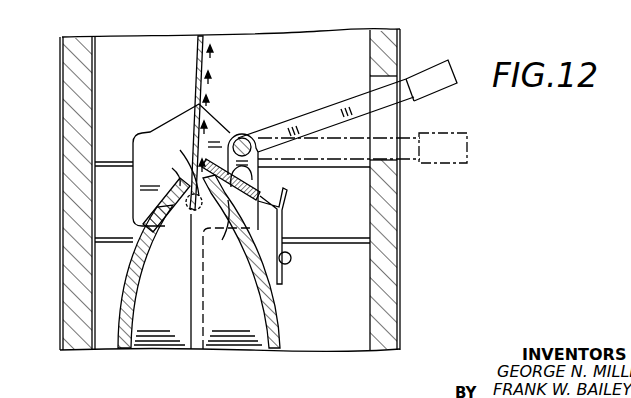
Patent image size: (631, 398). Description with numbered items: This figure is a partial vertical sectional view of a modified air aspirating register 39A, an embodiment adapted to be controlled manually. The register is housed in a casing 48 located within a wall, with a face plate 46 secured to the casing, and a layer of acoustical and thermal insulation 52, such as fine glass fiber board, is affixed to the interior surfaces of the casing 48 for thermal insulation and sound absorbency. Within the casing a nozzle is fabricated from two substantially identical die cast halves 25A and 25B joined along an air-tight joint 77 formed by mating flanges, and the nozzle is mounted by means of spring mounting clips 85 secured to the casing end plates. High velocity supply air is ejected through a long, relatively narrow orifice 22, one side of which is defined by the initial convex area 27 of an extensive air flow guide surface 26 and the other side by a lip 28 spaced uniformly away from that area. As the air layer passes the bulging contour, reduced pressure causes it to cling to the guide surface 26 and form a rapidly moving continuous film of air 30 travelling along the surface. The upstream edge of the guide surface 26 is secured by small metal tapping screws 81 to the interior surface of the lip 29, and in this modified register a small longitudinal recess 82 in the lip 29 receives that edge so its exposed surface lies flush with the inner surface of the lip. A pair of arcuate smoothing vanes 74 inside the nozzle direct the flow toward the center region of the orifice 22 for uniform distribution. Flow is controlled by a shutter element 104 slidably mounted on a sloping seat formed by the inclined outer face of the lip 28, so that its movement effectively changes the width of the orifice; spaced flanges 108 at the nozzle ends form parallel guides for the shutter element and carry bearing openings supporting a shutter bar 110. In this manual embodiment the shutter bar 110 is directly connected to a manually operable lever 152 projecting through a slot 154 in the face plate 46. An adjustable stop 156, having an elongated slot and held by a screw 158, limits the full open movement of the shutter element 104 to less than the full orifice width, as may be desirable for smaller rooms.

The casing 48 is at (60, 113).
The acoustical and thermal insulation 52 is at (93, 76).
The spring mounting clips 85 is at (116, 208).
The die cast half 25A is at (134, 259).
The die cast half 25B is at (280, 308).
The air flow guide surface 26 is at (196, 62).
The film of air 30 is at (210, 67).
The flanges 108 is at (176, 115).
The shutter bar 110 is at (244, 138).
The face plate 46 is at (400, 55).
The manually operable lever 152 is at (452, 67).
The slot 154 is at (400, 108).
The initial area of the guide surface 27 is at (195, 160).
The lip 29 is at (165, 169).
The orifice 22 is at (169, 188).
The metal tapping screws 81 is at (166, 205).
The recess 82 is at (158, 223).
The lip 28 is at (226, 208).
The shutter element 104 is at (243, 196).
The stop 156 is at (284, 227).
The screw 158 is at (291, 260).
The air-tight joint 77 is at (200, 307).
The arcuate smoothing vanes 74 is at (152, 350).
The modified register 39A is at (483, 233).